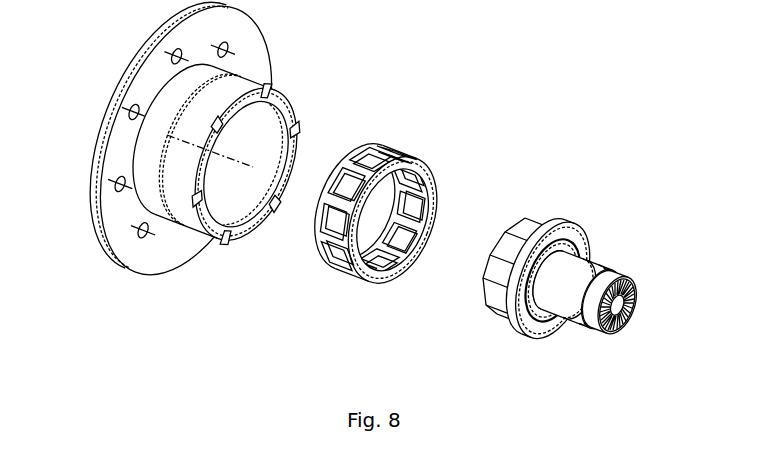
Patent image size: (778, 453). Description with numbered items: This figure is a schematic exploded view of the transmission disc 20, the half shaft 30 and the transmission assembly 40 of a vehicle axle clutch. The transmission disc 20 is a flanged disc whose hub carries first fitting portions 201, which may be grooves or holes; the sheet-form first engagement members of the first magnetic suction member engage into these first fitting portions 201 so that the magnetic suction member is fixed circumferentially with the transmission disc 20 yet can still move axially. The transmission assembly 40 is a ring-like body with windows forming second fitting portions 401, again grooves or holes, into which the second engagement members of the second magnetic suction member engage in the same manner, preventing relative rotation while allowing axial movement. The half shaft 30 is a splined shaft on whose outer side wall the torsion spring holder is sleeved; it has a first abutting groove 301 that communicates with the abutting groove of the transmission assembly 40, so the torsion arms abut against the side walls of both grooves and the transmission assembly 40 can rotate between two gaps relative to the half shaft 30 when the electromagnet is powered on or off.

The transmission disc 20 is at (237, 169).
The first fitting portion 201 is at (291, 132).
The transmission assembly 40 is at (396, 220).
The second fitting portion 401 is at (404, 166).
The half shaft 30 is at (560, 275).
The first abutting groove 301 is at (560, 232).